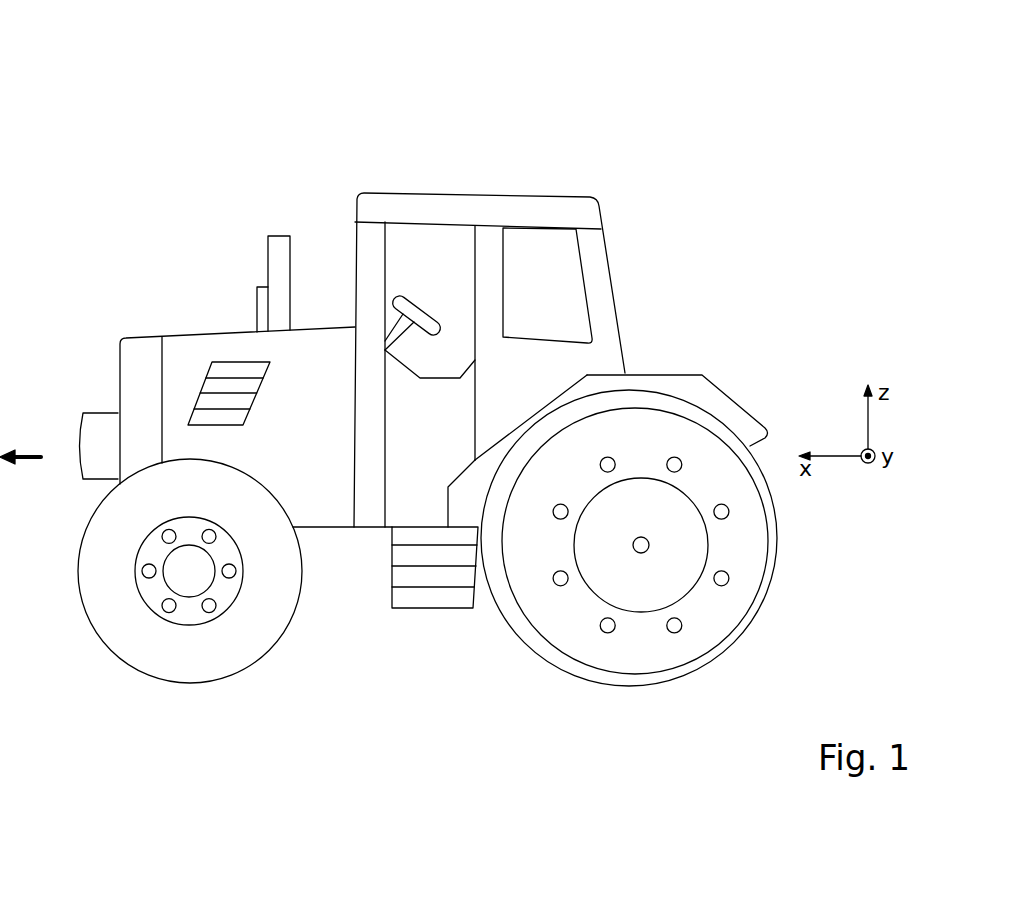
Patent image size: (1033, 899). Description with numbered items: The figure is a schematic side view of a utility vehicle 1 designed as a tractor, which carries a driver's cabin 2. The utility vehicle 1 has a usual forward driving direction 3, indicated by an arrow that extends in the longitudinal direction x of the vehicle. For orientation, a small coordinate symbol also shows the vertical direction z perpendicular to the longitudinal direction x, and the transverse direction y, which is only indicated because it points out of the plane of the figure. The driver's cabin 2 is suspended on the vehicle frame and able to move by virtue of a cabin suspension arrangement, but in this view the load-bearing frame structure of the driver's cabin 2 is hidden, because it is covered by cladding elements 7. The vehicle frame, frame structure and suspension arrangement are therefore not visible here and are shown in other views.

The utility vehicle 1 is at (528, 120).
The driver's cabin 2 is at (400, 168).
The forward driving direction 3 is at (19, 455).
The cladding elements 7 is at (592, 264).